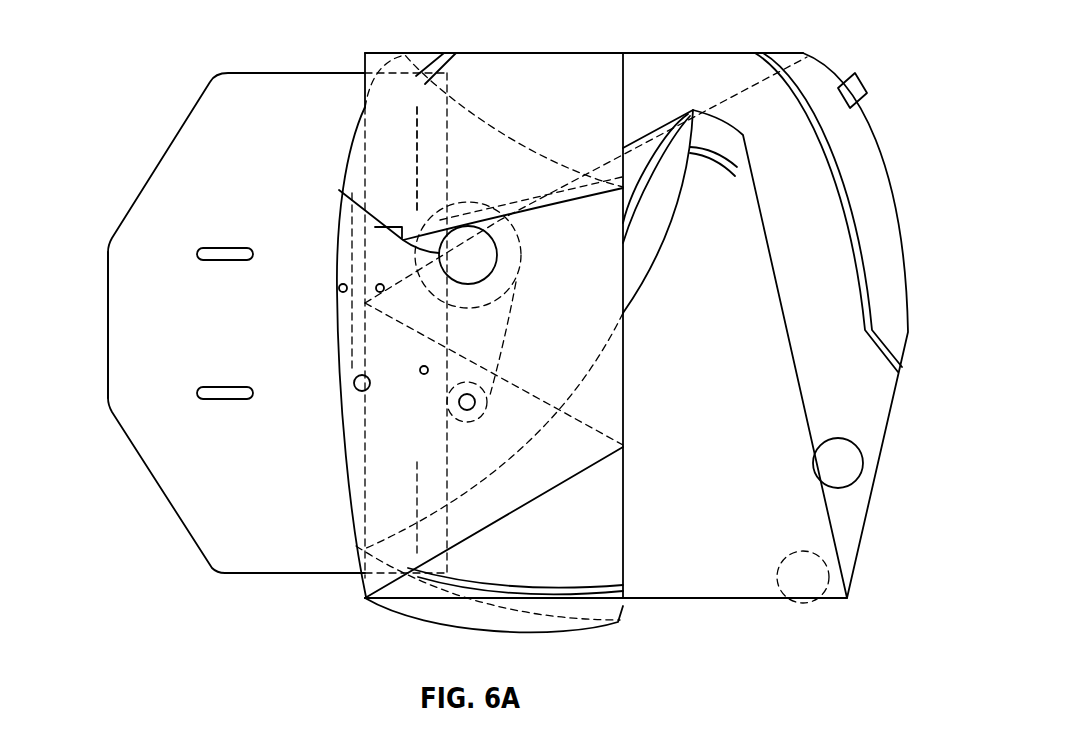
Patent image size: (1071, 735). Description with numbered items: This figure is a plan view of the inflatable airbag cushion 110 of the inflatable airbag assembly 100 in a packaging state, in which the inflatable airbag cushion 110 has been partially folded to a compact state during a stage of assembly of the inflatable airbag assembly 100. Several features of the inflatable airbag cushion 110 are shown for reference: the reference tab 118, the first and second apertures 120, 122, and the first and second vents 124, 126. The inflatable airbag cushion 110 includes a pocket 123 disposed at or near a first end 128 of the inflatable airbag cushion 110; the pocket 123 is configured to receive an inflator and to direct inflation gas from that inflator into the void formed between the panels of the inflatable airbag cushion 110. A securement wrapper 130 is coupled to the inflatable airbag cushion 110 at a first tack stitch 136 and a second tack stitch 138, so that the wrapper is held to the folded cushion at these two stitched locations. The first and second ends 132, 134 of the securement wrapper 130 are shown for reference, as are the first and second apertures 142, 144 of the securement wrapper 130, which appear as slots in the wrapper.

The inflatable airbag assembly 100 is at (176, 40).
The inflatable airbag cushion 110 is at (775, 358).
The reference tab 118 is at (858, 77).
The first aperture 120 is at (350, 196).
The second aperture 122 is at (458, 404).
The pocket 123 is at (512, 325).
The first vent 124 is at (864, 462).
The second vent 126 is at (852, 578).
The first end 128 is at (336, 330).
The securement wrapper 130 is at (270, 142).
The first end 132 is at (522, 294).
The second end 134 is at (107, 322).
The first tack stitch 136 is at (417, 143).
The second tack stitch 138 is at (417, 462).
The first aperture 142 is at (225, 249).
The second aperture 144 is at (225, 388).